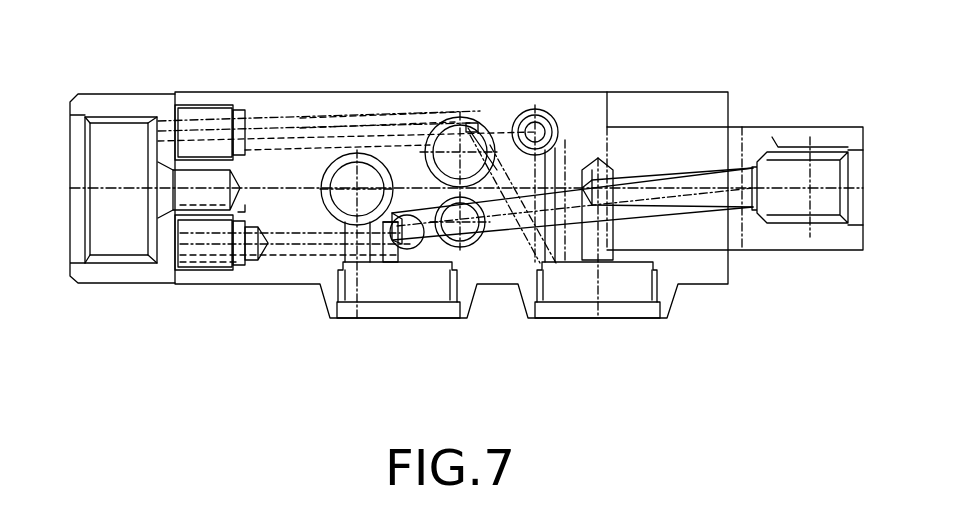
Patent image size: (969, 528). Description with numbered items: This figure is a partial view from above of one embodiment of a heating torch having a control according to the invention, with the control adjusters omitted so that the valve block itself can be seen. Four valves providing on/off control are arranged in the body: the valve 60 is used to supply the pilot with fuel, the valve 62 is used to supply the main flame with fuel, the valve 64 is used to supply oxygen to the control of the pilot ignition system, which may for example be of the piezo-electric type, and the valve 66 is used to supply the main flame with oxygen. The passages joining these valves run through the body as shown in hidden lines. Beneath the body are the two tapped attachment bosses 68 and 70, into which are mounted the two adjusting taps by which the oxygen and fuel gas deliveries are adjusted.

The valve 60 is at (540, 128).
The valve 62 is at (460, 152).
The valve 64 is at (468, 240).
The valve 66 is at (357, 188).
The tapped attachment boss 68 is at (653, 288).
The tapped attachment boss 70 is at (347, 308).